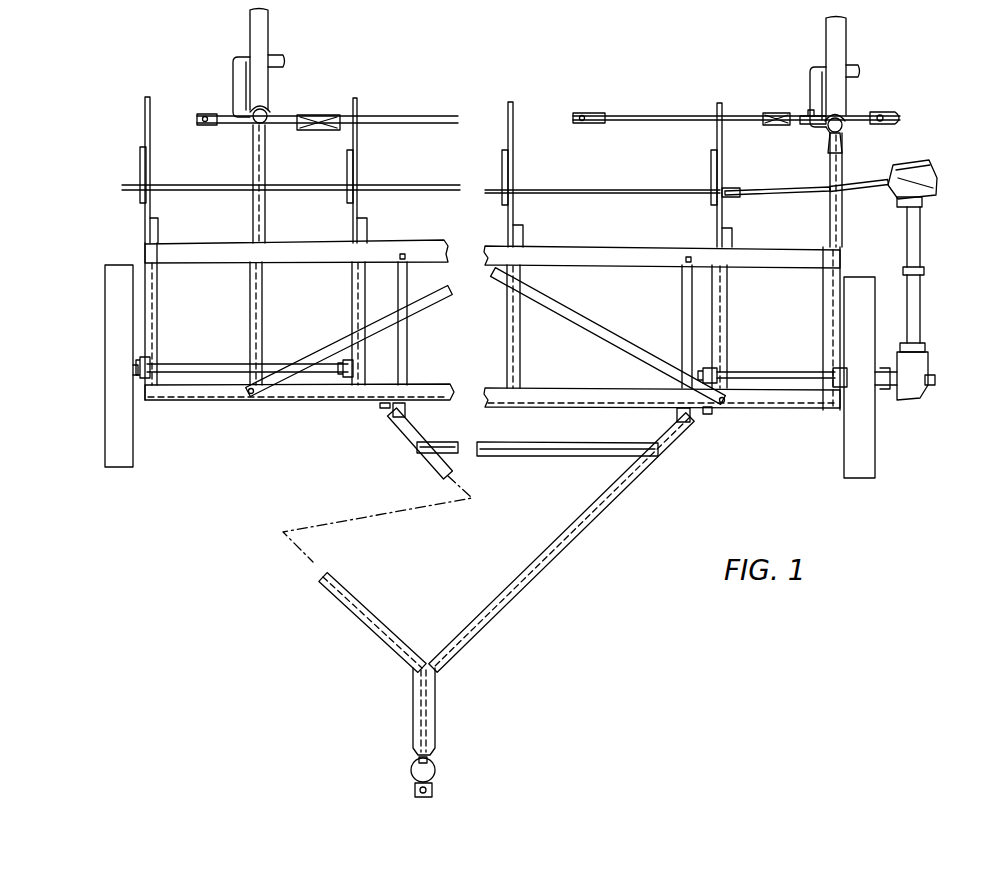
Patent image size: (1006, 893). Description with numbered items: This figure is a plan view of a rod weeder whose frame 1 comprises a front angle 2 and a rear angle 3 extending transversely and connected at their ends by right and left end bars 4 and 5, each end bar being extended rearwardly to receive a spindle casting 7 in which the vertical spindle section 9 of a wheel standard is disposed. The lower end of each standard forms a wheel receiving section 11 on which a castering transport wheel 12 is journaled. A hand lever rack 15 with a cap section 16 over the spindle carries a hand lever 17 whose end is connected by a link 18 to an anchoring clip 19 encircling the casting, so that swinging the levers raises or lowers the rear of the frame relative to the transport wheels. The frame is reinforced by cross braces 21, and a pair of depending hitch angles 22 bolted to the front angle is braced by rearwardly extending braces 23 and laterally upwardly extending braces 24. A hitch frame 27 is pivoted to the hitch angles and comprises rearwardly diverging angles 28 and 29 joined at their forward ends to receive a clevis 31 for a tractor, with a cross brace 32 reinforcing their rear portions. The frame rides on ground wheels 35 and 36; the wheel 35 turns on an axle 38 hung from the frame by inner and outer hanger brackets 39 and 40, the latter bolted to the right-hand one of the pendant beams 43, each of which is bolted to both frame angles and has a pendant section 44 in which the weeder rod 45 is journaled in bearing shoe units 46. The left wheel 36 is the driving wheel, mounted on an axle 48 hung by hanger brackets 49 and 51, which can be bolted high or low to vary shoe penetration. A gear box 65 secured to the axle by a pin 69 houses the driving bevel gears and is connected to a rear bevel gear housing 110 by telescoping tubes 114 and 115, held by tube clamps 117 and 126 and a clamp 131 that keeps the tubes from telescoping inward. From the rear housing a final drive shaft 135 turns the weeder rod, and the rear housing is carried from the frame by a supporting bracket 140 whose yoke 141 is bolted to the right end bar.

The frame 1 is at (206, 411).
The front angle 2 is at (308, 392).
The rear angle 3 is at (441, 244).
The right end bar 4 is at (838, 186).
The left end bar 5 is at (250, 297).
The spindle casting 7 is at (843, 146).
The vertical spindle section 9 is at (841, 118).
The wheel receiving section 11 is at (286, 62).
The transport wheel 12 is at (562, 128).
The hand lever rack 15 is at (803, 120).
The cap section 16 is at (822, 130).
The hand lever 17 is at (553, 101).
The link 18 is at (878, 115).
The anchoring clip 19 is at (830, 140).
The cross braces 21 is at (441, 300).
The hitch angles 22 is at (407, 410).
The rearwardly extending braces 23 is at (408, 362).
The laterally upwardly extending braces 24 is at (709, 415).
The hitch frame 27 is at (452, 710).
The rearwardly diverging angle 28 is at (345, 628).
The rearwardly diverging angle 29 is at (554, 561).
The clevis 31 is at (437, 772).
The cross brace 32 is at (534, 452).
The ground wheel 35 is at (110, 340).
The ground wheel 36 is at (862, 465).
The axle 38 is at (207, 365).
The inner hanger bracket 39 is at (354, 366).
The outer hanger bracket 40 is at (150, 364).
The pendant beams 43 is at (155, 282).
The pendant section 44 is at (151, 135).
The weeder rod 45 is at (575, 189).
The weeder rod bearing shoe units 46 is at (140, 175).
The axle 48 is at (760, 373).
The axle hanger bracket 49 is at (717, 370).
The axle hanger bracket 51 is at (833, 376).
The gear box 65 is at (903, 388).
The pin 69 is at (934, 382).
The rear bevel gear housing 110 is at (915, 182).
The forward tube 114 is at (921, 315).
The telescoping tube 115 is at (920, 256).
The tube clamp 117 is at (926, 348).
The tube clamp 126 is at (920, 205).
The clamp 131 is at (925, 272).
The final drive shaft 135 is at (782, 194).
The supporting bracket 140 is at (867, 203).
The yoke 141 is at (830, 222).